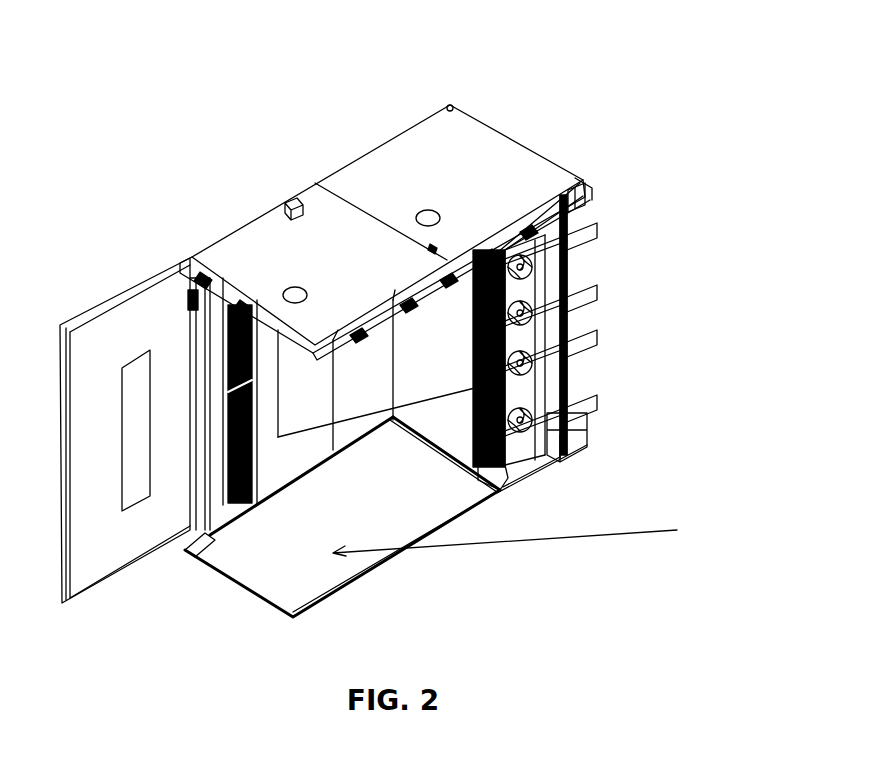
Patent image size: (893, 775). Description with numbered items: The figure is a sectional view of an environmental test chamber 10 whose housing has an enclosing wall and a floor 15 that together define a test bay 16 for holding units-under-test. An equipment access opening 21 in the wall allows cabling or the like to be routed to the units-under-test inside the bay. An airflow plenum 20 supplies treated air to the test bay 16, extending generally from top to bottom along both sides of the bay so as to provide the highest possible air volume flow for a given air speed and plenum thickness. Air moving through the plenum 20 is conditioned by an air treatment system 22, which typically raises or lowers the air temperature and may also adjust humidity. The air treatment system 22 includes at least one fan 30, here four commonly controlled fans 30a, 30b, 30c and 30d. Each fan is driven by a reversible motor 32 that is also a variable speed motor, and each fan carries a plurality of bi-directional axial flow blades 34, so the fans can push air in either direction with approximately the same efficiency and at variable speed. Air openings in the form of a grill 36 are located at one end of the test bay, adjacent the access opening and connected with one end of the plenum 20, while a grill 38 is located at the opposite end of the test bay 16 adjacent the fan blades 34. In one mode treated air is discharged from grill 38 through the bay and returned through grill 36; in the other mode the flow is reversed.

The environmental test chamber 10 is at (365, 73).
The floor 15 is at (742, 514).
The test bay 16 is at (417, 480).
The airflow plenum 20 is at (480, 237).
The equipment access opening 21 is at (560, 370).
The air treatment system 22 is at (609, 217).
The fan 30 is at (563, 463).
The fan 30a is at (540, 268).
The fan 30b is at (540, 315).
The fan 30c is at (540, 365).
The fan 30d is at (540, 422).
The reversible motor 32 is at (600, 223).
The bi-directional axial flow blades 34 is at (568, 260).
The grill 36 is at (205, 287).
The grill 38 is at (583, 180).